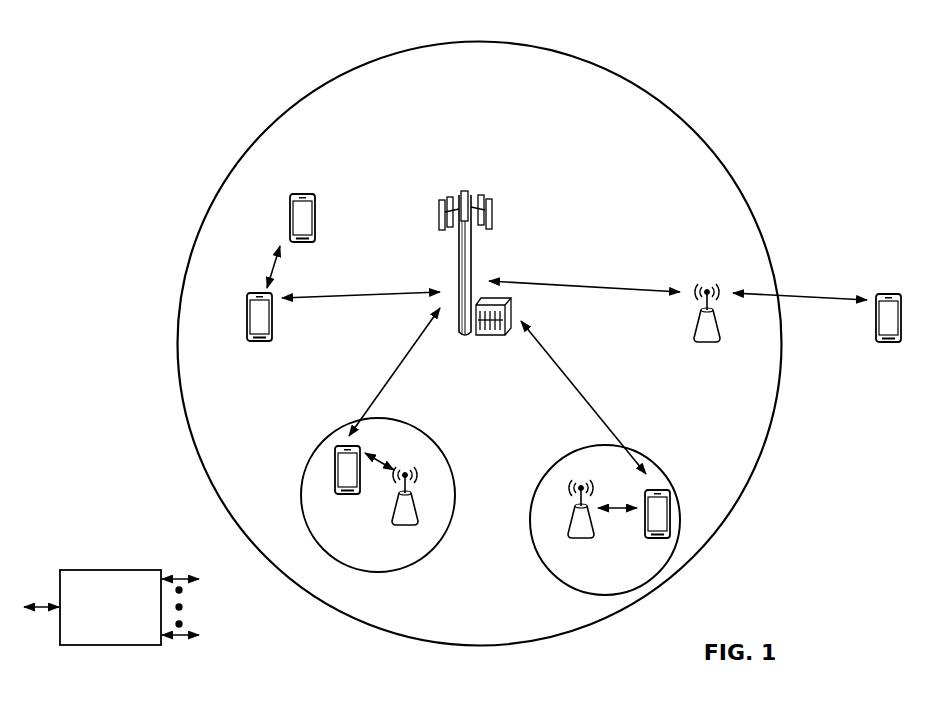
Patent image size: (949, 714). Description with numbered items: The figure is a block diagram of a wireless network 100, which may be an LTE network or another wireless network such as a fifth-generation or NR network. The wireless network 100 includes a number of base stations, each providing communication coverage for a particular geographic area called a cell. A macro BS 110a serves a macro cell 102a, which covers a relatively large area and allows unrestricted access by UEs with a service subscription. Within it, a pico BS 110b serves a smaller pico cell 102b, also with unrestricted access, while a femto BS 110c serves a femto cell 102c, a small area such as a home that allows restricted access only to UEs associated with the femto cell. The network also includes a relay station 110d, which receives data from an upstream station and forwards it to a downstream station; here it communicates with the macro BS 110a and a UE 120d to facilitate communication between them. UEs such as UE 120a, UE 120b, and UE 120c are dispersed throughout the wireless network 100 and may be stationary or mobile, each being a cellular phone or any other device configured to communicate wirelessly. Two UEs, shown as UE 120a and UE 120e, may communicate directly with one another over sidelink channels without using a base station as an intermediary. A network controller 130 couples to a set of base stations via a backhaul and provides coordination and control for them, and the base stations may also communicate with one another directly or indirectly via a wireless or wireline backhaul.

The wireless network 100 is at (98, 36).
The macro cell 102a is at (680, 116).
The pico cell 102b is at (447, 443).
The femto cell 102c is at (562, 455).
The macro BS 110a is at (470, 186).
The pico BS 110b is at (419, 518).
The femto BS 110c is at (569, 529).
The relay station 110d is at (707, 282).
The UE 120a is at (247, 314).
The UE 120b is at (343, 494).
The UE 120c is at (650, 537).
The UE 120d is at (895, 293).
The UE 120e is at (290, 205).
The network controller 130 is at (111, 570).